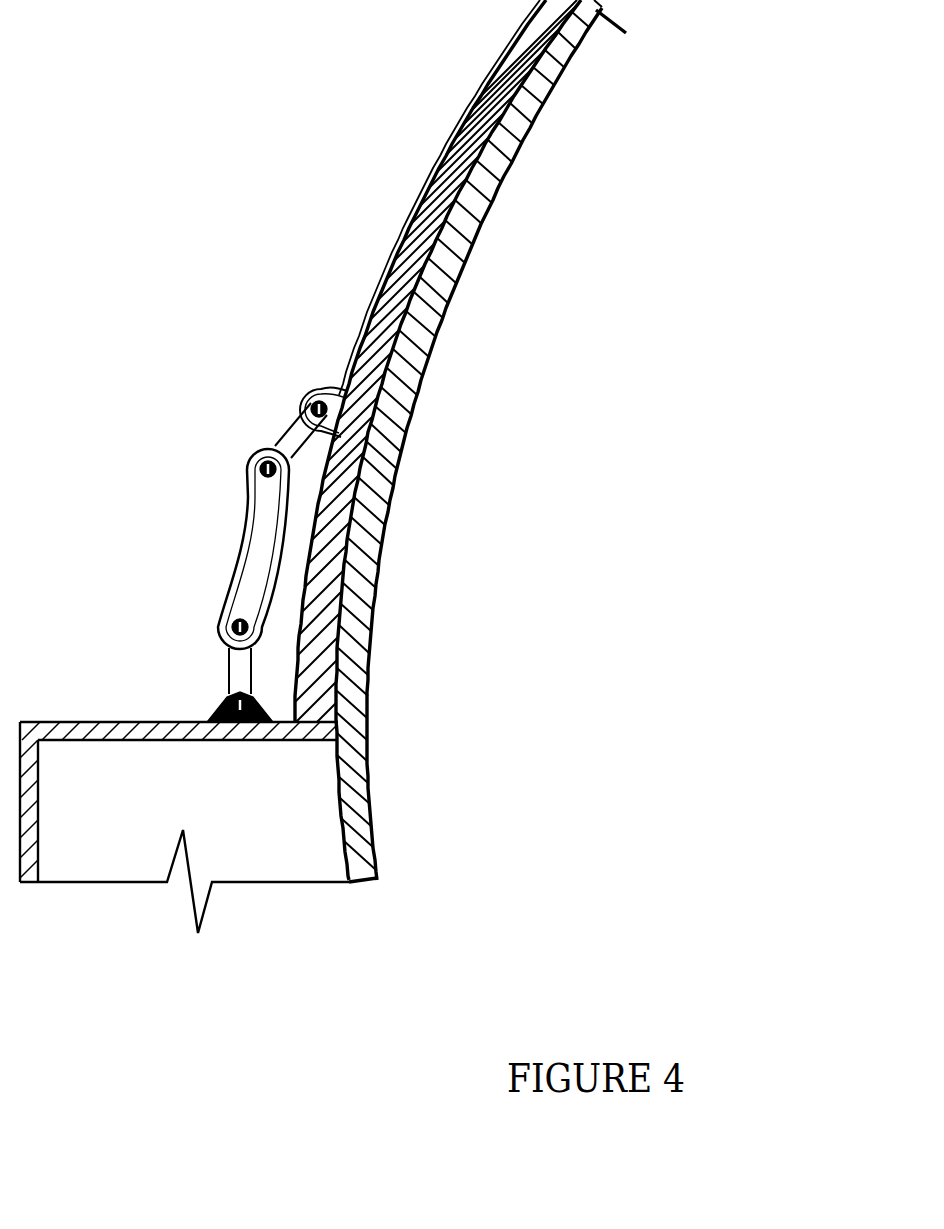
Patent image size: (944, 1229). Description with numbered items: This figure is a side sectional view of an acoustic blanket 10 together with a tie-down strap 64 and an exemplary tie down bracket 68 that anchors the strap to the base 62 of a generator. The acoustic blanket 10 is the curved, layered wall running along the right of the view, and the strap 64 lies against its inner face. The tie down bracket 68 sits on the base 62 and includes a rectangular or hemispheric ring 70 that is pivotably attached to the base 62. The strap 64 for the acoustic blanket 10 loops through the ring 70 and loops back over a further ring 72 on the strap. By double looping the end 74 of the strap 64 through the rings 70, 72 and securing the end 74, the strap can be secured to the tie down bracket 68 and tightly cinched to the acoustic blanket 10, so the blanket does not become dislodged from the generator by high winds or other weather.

The acoustic blanket 10 is at (492, 127).
The base 62 is at (92, 795).
The strap 64 is at (434, 162).
The tie down bracket 68 is at (186, 440).
The rectangular or hemispheric ring 70 is at (232, 672).
The ring 72 is at (292, 437).
The end of the strap 74 is at (248, 527).